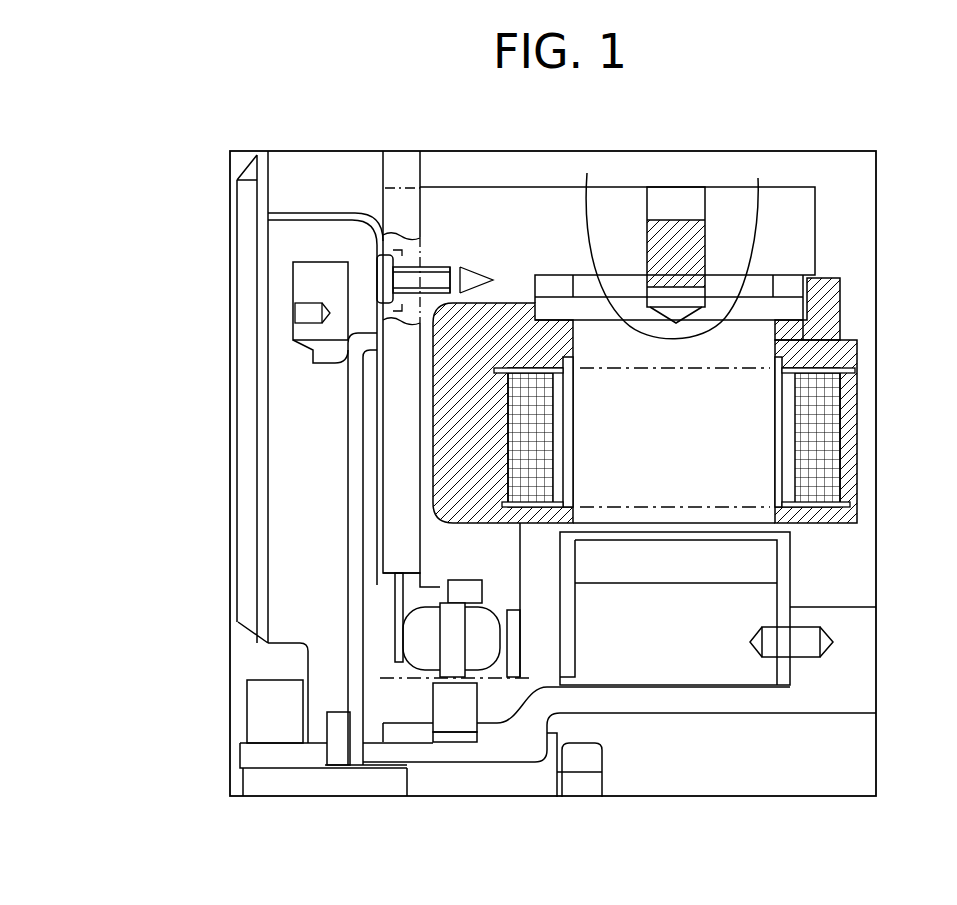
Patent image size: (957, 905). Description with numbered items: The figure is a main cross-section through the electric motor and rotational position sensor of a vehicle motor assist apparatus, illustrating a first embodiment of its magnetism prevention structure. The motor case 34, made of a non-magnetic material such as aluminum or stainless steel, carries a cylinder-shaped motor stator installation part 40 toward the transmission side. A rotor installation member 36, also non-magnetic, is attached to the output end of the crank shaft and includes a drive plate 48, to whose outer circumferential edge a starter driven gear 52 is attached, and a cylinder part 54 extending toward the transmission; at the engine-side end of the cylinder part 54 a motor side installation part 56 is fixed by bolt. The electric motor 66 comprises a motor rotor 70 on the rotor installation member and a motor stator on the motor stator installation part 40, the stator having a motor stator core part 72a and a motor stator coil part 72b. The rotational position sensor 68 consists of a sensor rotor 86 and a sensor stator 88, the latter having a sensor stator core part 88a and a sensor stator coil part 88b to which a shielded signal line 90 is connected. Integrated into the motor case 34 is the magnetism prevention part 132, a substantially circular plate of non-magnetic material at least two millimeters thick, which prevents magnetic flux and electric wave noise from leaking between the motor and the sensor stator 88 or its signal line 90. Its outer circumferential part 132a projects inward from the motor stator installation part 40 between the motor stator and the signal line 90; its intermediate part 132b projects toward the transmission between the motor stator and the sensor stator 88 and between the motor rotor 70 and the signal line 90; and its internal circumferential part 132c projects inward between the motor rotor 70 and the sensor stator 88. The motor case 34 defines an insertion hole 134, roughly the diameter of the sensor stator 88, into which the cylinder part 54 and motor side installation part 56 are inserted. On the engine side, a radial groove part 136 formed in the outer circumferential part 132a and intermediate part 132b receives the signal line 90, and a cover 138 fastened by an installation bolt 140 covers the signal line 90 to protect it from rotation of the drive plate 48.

The motor case 34 is at (806, 177).
The rotor installation member 36 is at (852, 603).
The motor stator installation part 40 is at (560, 207).
The drive plate 48 is at (353, 577).
The starter driven gear 52 is at (307, 287).
The cylinder part 54 is at (858, 656).
The motor side installation part 56 is at (460, 752).
The electric motor 66 is at (845, 257).
The rotational position sensor 68 is at (391, 693).
The motor rotor 70 is at (715, 648).
The motor stator core part 72a is at (830, 407).
The motor stator coil part 72b is at (730, 418).
The sensor rotor 86 is at (443, 702).
The sensor stator 88 is at (281, 638).
The sensor stator core part 88a is at (453, 633).
The sensor stator coil part 88b is at (413, 653).
The signal line 90 is at (397, 343).
The magnetism prevention part 132 is at (415, 482).
The outer circumferential part 132a is at (420, 370).
The intermediate part 132b is at (467, 547).
The internal circumferential part 132c is at (517, 642).
The insertion hole 134 is at (527, 690).
The radial groove part 136 is at (422, 407).
The cover 138 is at (370, 448).
The installation bolt 140 is at (386, 273).